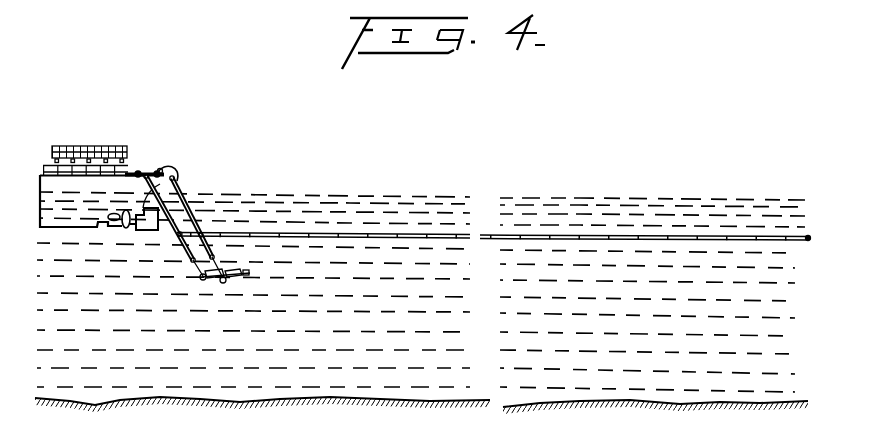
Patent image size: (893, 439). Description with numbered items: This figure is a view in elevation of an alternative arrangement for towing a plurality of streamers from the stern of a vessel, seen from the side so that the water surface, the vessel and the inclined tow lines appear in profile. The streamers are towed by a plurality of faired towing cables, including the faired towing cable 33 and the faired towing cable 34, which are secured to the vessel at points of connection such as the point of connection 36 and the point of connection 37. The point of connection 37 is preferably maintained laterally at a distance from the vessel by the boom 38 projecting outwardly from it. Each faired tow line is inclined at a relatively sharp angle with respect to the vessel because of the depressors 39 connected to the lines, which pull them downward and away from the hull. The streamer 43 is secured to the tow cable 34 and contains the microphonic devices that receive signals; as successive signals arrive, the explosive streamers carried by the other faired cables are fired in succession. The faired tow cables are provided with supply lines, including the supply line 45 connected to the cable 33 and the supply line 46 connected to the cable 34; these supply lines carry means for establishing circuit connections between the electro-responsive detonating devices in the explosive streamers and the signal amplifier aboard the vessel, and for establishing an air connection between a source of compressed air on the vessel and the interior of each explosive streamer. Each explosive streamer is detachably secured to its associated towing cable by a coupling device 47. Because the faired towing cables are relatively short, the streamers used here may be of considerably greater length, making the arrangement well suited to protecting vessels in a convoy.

The faired towing cable 33 is at (186, 196).
The faired towing cable 34 is at (167, 222).
The point of connection 36 is at (158, 172).
The point of connection 37 is at (139, 172).
The boom 38 is at (137, 172).
The depressor 39 is at (225, 282).
The streamer 43 is at (483, 241).
The supply line 45 is at (177, 180).
The supply line 46 is at (160, 170).
The coupling device 47 is at (200, 236).